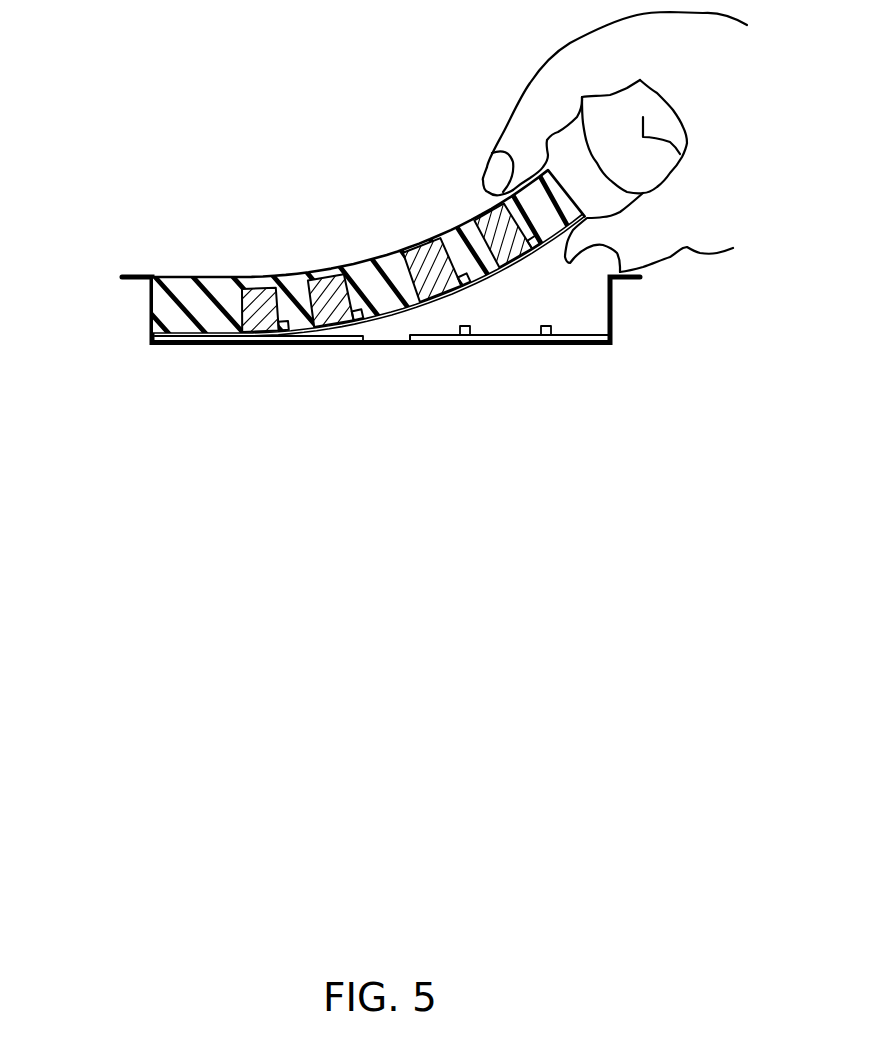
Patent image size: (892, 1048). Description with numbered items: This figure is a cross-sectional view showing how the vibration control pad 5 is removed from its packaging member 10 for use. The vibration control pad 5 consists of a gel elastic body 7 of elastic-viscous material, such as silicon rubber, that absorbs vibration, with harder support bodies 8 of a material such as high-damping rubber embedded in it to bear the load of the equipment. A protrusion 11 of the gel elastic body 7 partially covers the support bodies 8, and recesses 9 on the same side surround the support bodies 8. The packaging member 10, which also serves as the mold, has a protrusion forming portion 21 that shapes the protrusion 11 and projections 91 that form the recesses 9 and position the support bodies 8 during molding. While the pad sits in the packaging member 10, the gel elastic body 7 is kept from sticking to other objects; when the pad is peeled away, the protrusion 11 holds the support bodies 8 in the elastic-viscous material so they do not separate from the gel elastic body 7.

The vibration control pad 5 is at (190, 198).
The gel elastic body 7 is at (367, 273).
The support bodies 8 is at (267, 293).
The recesses 9 is at (531, 256).
The packaging member 10 is at (610, 307).
The protrusion 11 is at (261, 337).
The protrusion forming portion 21 is at (382, 338).
The projections 91 is at (545, 338).